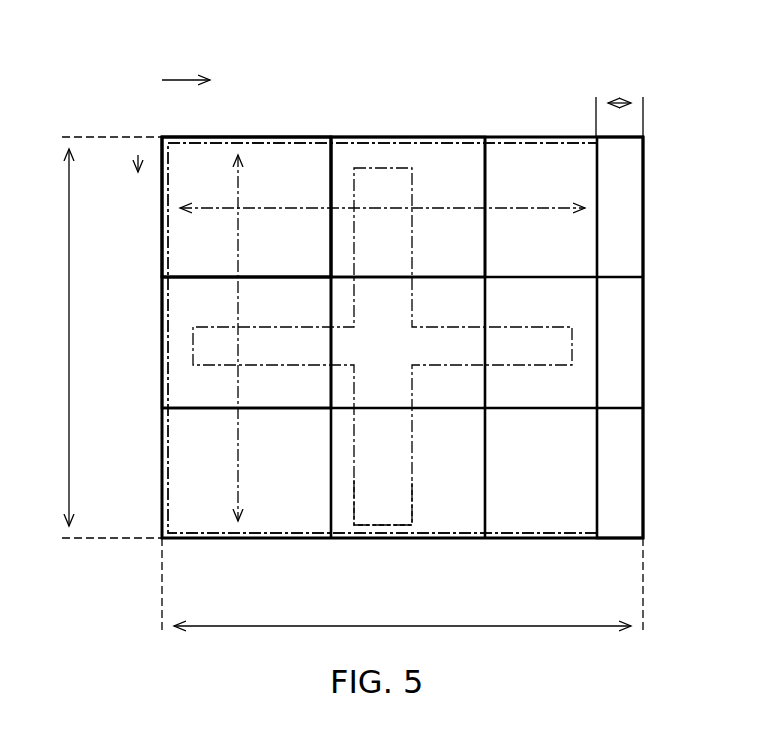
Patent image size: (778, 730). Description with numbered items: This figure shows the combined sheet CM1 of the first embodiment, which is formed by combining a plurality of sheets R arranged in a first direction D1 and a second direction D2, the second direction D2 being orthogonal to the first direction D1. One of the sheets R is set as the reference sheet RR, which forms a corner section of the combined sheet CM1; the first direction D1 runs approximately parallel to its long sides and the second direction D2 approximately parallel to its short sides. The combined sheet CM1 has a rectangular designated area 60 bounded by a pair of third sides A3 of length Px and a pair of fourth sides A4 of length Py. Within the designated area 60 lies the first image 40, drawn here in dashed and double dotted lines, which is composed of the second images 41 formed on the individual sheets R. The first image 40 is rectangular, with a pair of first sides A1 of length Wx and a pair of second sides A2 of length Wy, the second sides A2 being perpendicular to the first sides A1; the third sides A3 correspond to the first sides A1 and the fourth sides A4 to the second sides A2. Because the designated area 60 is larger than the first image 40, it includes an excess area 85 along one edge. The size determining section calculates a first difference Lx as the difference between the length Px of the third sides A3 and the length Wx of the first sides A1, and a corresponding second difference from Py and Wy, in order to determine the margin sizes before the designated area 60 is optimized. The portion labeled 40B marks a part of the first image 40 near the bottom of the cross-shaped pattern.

The first image 40 is at (600, 242).
The back surface of base plate 40B is at (412, 490).
The second image 41 is at (214, 155).
The designated area 60 is at (646, 233).
The excess area 85 is at (643, 543).
The combined sheet CM1 is at (647, 205).
The sheet R is at (399, 150).
The reference sheet RR is at (180, 186).
The first side A1 is at (270, 155).
The second side A2 is at (163, 307).
The third side A3 is at (366, 137).
The fourth side A4 is at (162, 265).
The first direction D1 is at (180, 80).
The second direction D2 is at (138, 160).
The length of third sides Px is at (402, 585).
The length of fourth sides Py is at (99, 337).
The first difference Lx is at (614, 103).
The length of first sides Wx is at (382, 193).
The length of second sides Wy is at (257, 338).